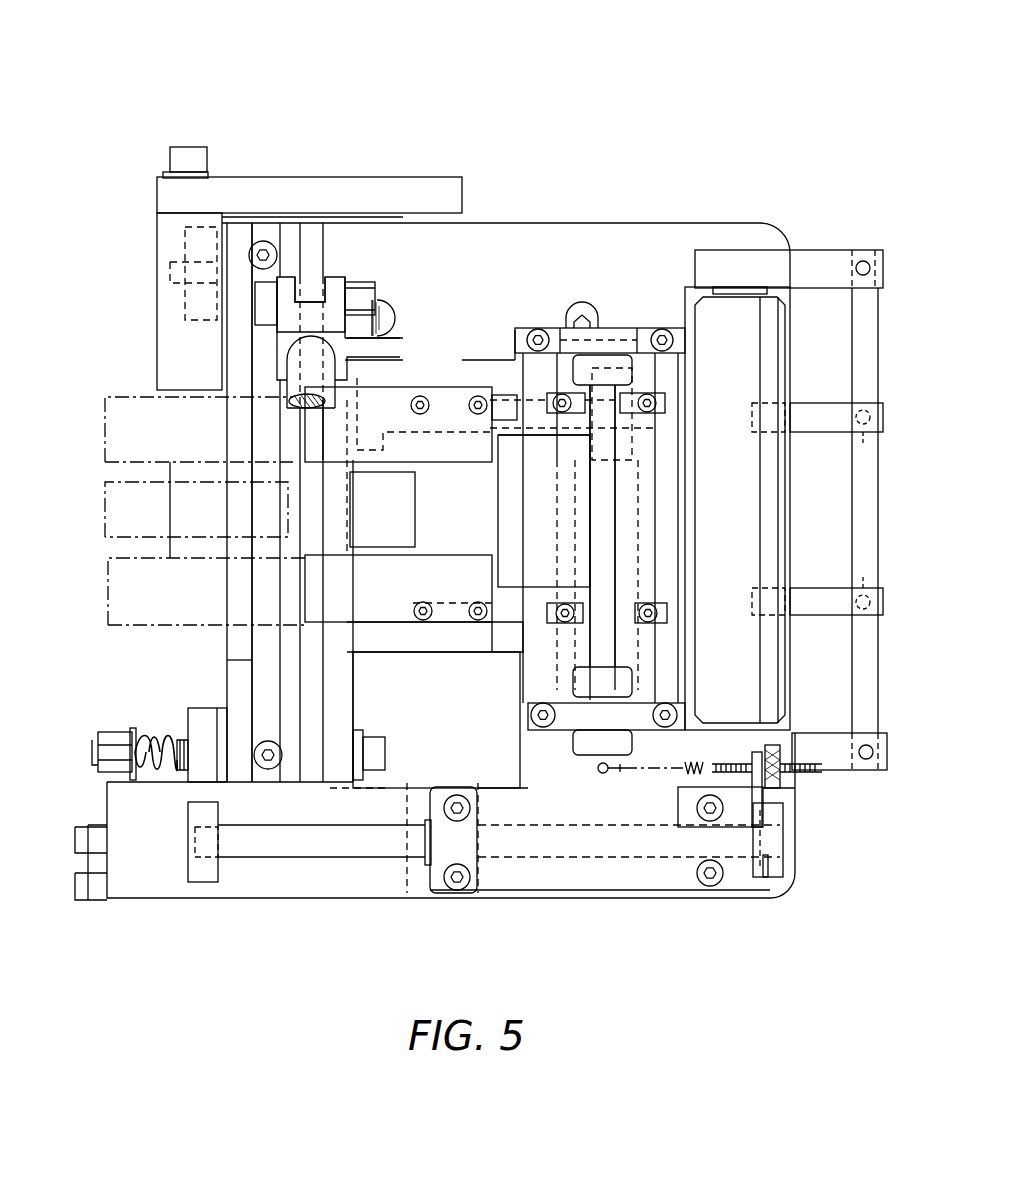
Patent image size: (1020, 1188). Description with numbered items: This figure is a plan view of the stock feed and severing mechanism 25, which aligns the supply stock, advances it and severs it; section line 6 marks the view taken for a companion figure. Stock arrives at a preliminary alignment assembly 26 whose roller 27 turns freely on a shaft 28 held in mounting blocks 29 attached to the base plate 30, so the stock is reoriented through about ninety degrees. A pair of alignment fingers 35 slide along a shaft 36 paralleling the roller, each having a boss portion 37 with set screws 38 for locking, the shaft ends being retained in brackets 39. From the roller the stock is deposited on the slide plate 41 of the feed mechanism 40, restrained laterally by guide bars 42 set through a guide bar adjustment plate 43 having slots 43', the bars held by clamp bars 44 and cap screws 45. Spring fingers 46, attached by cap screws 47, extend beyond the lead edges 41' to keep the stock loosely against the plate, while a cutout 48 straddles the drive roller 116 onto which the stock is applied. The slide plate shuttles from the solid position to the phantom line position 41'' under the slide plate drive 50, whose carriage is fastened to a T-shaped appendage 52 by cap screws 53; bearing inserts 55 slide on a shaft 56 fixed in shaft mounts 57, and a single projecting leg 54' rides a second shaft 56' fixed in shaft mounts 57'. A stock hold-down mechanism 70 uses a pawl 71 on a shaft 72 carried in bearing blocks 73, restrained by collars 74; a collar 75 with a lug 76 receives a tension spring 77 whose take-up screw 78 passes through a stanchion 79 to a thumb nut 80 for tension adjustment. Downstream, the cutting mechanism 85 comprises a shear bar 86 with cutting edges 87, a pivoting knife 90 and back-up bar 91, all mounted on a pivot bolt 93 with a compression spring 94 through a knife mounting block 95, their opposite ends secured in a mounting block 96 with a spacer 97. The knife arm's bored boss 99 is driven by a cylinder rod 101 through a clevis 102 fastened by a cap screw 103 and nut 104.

The stock feed and severing mechanism 25 is at (562, 100).
The preliminary alignment assembly 26 is at (815, 235).
The roller 27 is at (782, 360).
The shaft 28 is at (770, 265).
The mounting blocks 29 is at (735, 250).
The base plate 30 is at (707, 230).
The alignment fingers 35 is at (843, 417).
The shaft 36 is at (868, 535).
The boss portion 37 is at (885, 417).
The set screws 38 is at (873, 432).
The brackets 39 is at (855, 262).
The feed mechanism 40 is at (490, 912).
The slide plate 41 is at (489, 504).
The lead edges 41' is at (292, 432).
The phantom line position 41'' is at (112, 505).
The guide bars 42 is at (510, 400).
The guide bar adjustment plate 43 is at (689, 528).
The slots 43' is at (655, 543).
The clamp bars 44 is at (640, 395).
The cap screws 45 is at (560, 412).
The spring fingers 46 is at (350, 470).
The cap screws 47 is at (475, 412).
The cutout 48 is at (415, 510).
The slide plate drive 50 is at (528, 912).
The T-shaped appendage 52 is at (640, 882).
The cap screws 53 is at (465, 830).
The projecting leg 54' is at (580, 436).
The bearing inserts 55 is at (427, 820).
The shaft 56 is at (499, 825).
The shaft 56' is at (470, 469).
The shaft mounts 57 is at (494, 846).
The shaft mounts 57' is at (380, 483).
The section line 6 is at (628, 162).
The stock hold-down mechanism 70 is at (607, 795).
The pawl 71 is at (508, 538).
The shaft 72 is at (597, 513).
The bearing blocks 73 is at (600, 330).
The collars 74 is at (580, 372).
The collar 75 is at (588, 742).
The lug 76 is at (600, 772).
The tension spring 77 is at (690, 770).
The take-up screw 78 is at (727, 762).
The stanchion 79 is at (757, 752).
The thumb nut 80 is at (785, 744).
The cutting mechanism 85 is at (302, 205).
The shear bar 86 is at (258, 418).
The cutting edges 87 is at (305, 668).
The knife 90 is at (310, 690).
The back-up bar 91 is at (353, 690).
The pivot bolt 93 is at (100, 745).
The compression spring 94 is at (130, 755).
The knife mounting block 95 is at (207, 710).
The mounting block 96 is at (185, 238).
The spacer 97 is at (312, 245).
The bored boss 99 is at (315, 282).
The rod 101 is at (295, 385).
The clevis 102 is at (292, 322).
The cap screw 103 is at (262, 310).
The nut 104 is at (360, 300).
The drive roller 116 is at (108, 530).